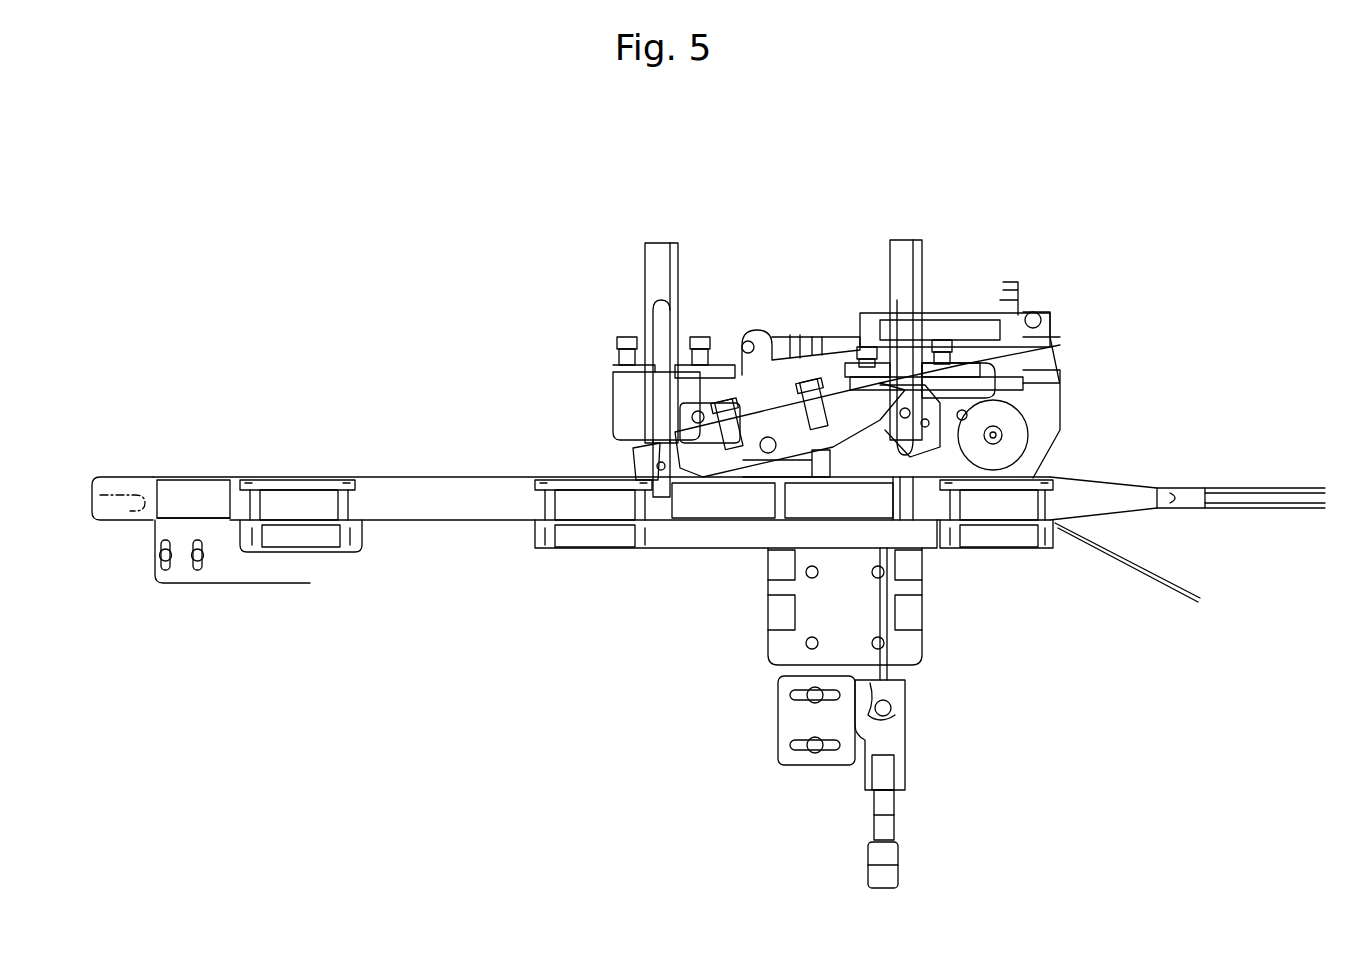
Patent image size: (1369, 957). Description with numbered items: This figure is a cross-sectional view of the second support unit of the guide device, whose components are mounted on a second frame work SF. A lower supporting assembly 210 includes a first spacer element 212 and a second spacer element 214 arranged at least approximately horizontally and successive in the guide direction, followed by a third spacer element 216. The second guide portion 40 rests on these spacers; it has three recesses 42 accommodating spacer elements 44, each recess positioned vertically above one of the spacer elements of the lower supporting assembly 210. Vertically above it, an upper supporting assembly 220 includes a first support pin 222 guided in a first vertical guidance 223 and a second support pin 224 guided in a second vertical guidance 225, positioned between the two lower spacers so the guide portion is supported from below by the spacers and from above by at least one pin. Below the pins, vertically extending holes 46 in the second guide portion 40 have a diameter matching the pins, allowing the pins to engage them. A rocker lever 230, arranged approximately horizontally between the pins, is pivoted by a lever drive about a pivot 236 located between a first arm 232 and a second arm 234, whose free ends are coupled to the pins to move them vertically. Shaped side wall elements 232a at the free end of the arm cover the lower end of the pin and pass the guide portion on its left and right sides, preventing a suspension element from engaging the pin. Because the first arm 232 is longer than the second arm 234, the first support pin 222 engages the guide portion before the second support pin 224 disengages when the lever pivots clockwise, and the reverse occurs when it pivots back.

The second guide portion 40 is at (408, 498).
The recesses 42 is at (283, 486).
The spacer elements 44 is at (313, 497).
The vertically extending holes 46 is at (655, 508).
The lower supporting assembly 210 is at (1097, 790).
The first spacer element 212 is at (987, 523).
The second spacer element 214 is at (582, 527).
The third spacer element 216 is at (310, 525).
The upper supporting assembly 220 is at (1118, 208).
The first support pin 222 is at (905, 305).
The first vertical guidance 223 is at (920, 262).
The second support pin 224 is at (660, 337).
The second vertical guidance 225 is at (645, 257).
The rocker lever 230 is at (785, 260).
The first arm 232 is at (833, 410).
The side wall elements 232a is at (925, 423).
The second arm 234 is at (698, 445).
The pivot 236 is at (767, 437).
The second frame work SF is at (817, 607).